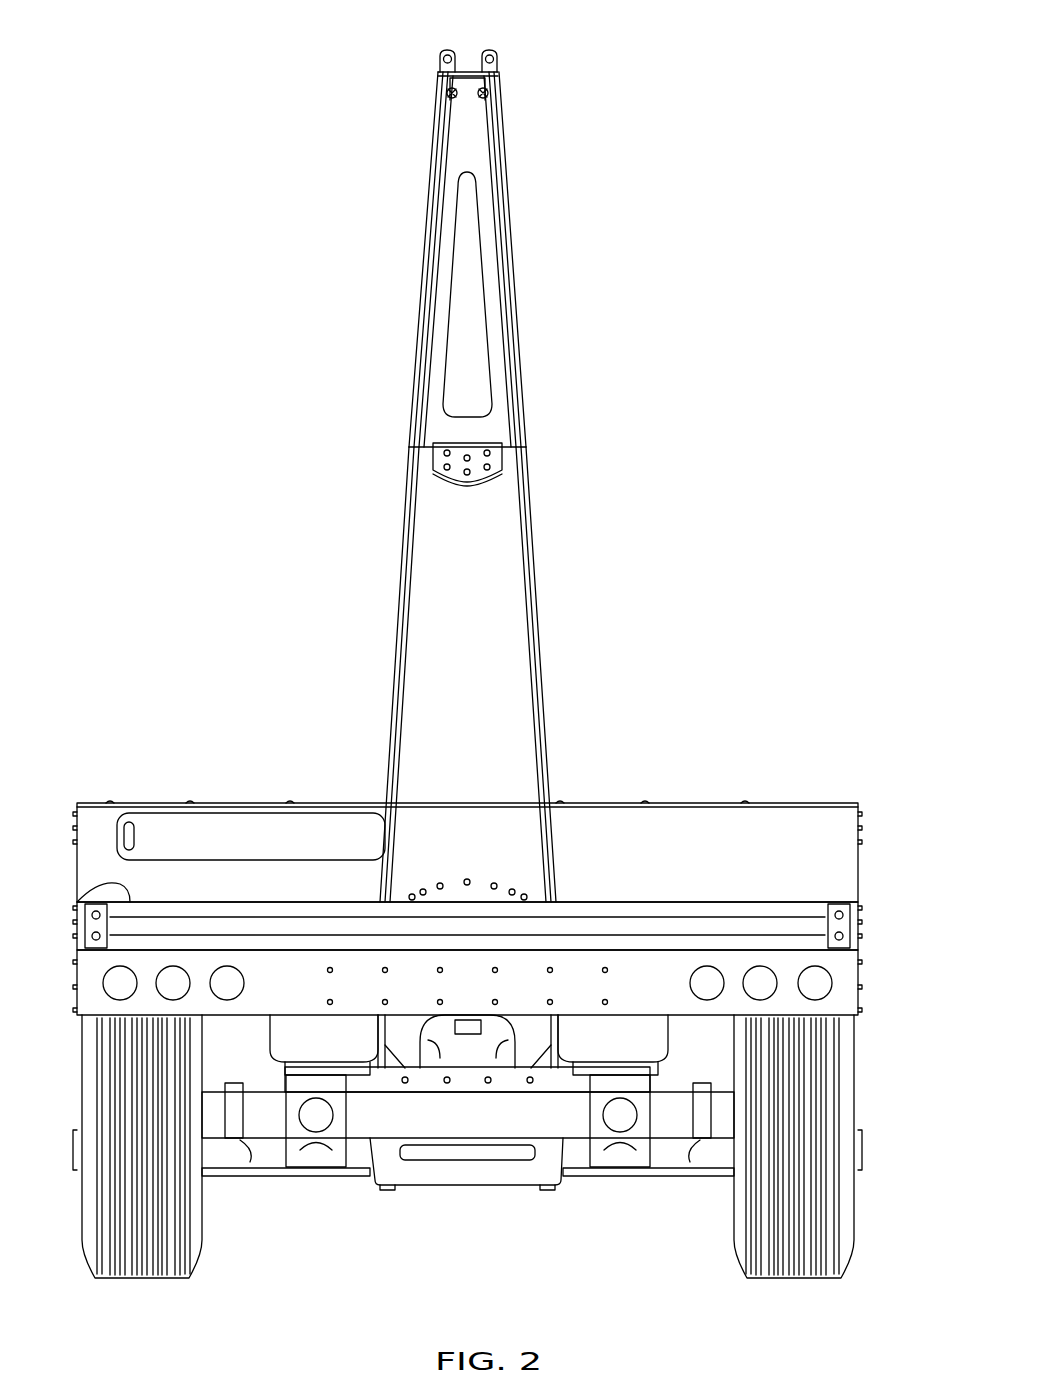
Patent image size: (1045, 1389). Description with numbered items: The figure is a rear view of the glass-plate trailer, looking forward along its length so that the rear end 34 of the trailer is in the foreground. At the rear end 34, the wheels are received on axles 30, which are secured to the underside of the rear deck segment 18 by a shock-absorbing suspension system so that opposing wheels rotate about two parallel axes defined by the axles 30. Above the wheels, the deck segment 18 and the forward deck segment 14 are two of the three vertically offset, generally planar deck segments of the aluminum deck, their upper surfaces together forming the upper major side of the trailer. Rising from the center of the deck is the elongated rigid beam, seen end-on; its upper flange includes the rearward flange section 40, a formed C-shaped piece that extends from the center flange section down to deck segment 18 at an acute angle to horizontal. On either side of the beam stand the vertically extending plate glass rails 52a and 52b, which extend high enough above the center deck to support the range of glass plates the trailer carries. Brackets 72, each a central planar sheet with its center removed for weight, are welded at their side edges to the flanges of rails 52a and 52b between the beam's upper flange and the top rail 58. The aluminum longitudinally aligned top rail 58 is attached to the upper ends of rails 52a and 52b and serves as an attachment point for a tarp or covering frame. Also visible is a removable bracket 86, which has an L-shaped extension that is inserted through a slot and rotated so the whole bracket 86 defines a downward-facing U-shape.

The deck segment 14 is at (446, 825).
The deck segment 18 is at (77, 895).
The axles 30 is at (388, 1125).
The rear end 34 is at (872, 981).
The rearward flange section 40 is at (468, 603).
The plate glass rail 52a is at (400, 568).
The plate glass rail 52b is at (533, 518).
The top rail 58 is at (460, 70).
The bracket 72 is at (464, 487).
The removable bracket 86 is at (117, 838).